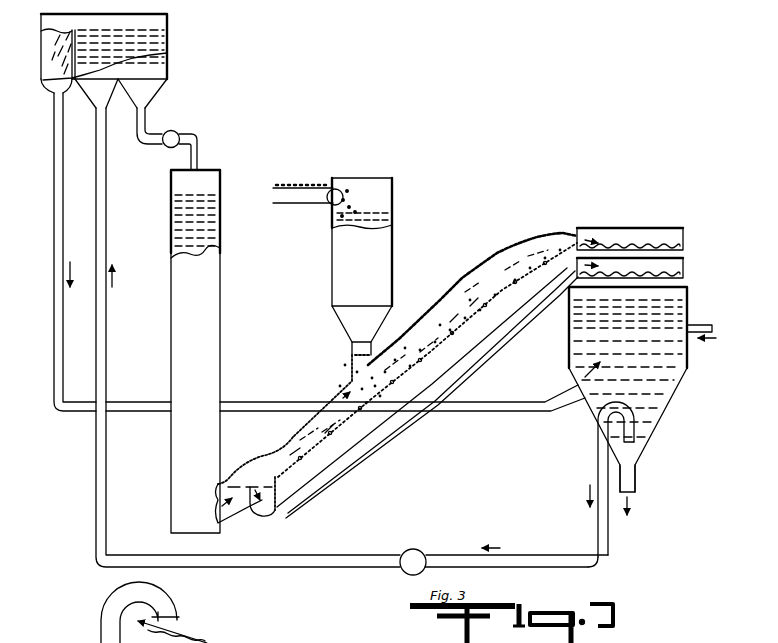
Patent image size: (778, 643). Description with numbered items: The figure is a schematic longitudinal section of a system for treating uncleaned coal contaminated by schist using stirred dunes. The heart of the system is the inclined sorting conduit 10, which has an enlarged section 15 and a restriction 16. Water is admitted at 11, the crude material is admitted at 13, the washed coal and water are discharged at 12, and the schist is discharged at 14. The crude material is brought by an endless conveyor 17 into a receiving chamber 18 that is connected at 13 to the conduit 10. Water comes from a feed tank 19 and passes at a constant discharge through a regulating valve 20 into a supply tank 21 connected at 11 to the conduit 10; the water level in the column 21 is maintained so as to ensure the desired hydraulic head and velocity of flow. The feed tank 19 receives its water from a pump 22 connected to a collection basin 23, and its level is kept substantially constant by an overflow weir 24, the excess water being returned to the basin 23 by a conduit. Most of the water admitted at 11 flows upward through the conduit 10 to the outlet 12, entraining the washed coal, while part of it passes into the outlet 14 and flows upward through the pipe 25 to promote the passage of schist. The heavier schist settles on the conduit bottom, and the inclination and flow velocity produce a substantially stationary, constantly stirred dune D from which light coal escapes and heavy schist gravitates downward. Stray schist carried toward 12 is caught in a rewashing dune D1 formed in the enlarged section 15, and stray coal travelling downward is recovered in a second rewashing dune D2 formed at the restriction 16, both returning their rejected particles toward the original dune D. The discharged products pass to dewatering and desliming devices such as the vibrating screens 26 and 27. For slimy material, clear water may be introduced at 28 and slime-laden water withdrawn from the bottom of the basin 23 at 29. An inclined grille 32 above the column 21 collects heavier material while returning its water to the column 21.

The sorting conduit 10 is at (403, 340).
The water admission point 11 is at (233, 512).
The washed coal and water discharge 12 is at (577, 236).
The crude material admission point 13 is at (355, 352).
The schist discharge outlet 14 is at (273, 511).
The enlarged section 15 is at (478, 275).
The restriction 16 is at (288, 446).
The endless conveyor 17 is at (318, 188).
The receiving chamber 18 is at (343, 241).
The feed tank 19 is at (162, 43).
The regulating valve 20 is at (175, 132).
The supply tank 21 is at (218, 244).
The pump 22 is at (420, 552).
The collection basin 23 is at (672, 393).
The overflow weir 24 is at (45, 33).
The pipe 25 is at (396, 416).
The vibrating screen 26 is at (684, 242).
The vibrating screen 27 is at (690, 268).
The clear water feed 28 is at (691, 323).
The slime water withdrawal 29 is at (636, 486).
The inclined grille 32 is at (205, 641).
The dune D is at (385, 388).
The rewashing dune D1 is at (464, 313).
The second rewashing dune D2 is at (330, 432).